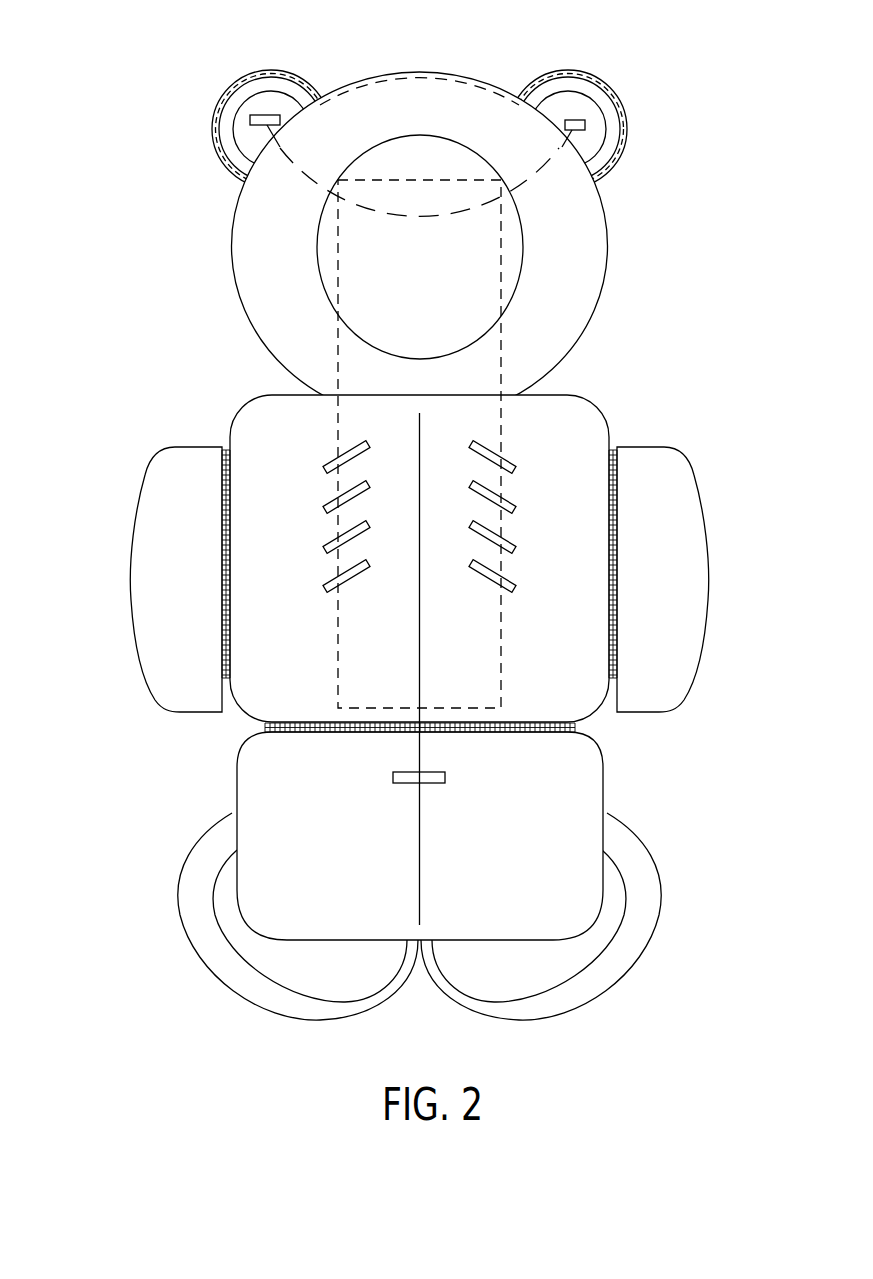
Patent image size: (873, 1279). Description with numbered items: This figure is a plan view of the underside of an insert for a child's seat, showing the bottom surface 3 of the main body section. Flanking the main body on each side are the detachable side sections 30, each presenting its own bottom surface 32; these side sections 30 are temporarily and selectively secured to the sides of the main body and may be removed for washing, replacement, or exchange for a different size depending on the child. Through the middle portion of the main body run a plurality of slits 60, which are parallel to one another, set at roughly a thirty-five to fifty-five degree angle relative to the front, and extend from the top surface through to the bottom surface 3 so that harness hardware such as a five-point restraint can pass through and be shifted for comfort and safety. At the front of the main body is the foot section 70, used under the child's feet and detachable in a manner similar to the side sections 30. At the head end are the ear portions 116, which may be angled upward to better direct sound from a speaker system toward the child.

The ear portion 116 is at (252, 72).
The bottom surface 3 is at (577, 438).
The detachable side sections 30 is at (133, 622).
The bottom surface 32 is at (155, 508).
The slits 60 is at (350, 582).
The foot section 70 is at (597, 992).